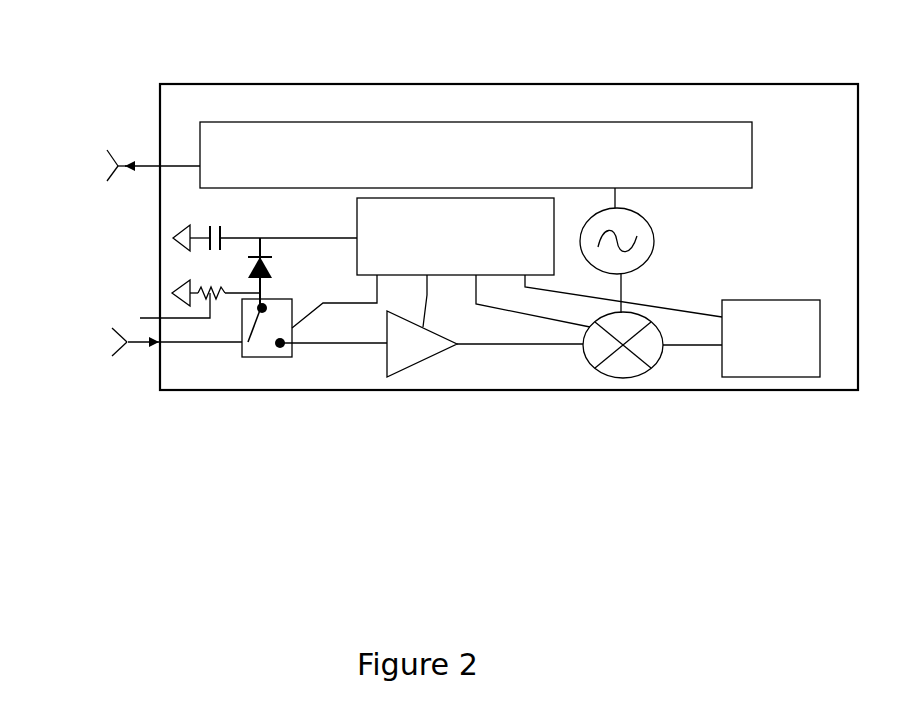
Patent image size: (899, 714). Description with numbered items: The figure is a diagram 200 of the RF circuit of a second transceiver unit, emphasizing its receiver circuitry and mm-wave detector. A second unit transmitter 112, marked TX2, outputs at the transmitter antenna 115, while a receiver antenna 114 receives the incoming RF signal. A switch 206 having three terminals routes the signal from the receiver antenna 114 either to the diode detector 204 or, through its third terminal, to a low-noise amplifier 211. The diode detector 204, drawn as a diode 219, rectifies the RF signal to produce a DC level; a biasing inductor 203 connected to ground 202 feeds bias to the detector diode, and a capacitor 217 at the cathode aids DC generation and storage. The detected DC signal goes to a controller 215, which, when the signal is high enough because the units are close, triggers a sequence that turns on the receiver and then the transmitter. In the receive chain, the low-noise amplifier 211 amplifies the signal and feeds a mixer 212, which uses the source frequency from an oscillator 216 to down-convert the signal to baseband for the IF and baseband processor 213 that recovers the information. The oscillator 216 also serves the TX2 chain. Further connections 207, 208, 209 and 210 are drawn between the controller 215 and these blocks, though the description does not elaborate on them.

The second unit transmitter 112 is at (407, 152).
The receiver antenna 114 is at (140, 346).
The transmitter antenna 115 is at (148, 162).
The diagram 200 is at (213, 489).
The ground 202 is at (175, 288).
The biasing inductor 203 is at (153, 308).
The diode detector 204 is at (245, 262).
The switch 206 is at (267, 357).
The switch control line 207 is at (317, 309).
The amplifier control line 208 is at (477, 374).
The mixer control line 209 is at (515, 312).
The baseband control line 210 is at (672, 310).
The low-noise amplifier 211 is at (403, 370).
The mixer 212 is at (623, 378).
The IF and baseband processor 213 is at (788, 377).
The controller 215 is at (383, 220).
The oscillator 216 is at (642, 236).
The capacitor 217 is at (228, 228).
The diode 219 is at (268, 240).